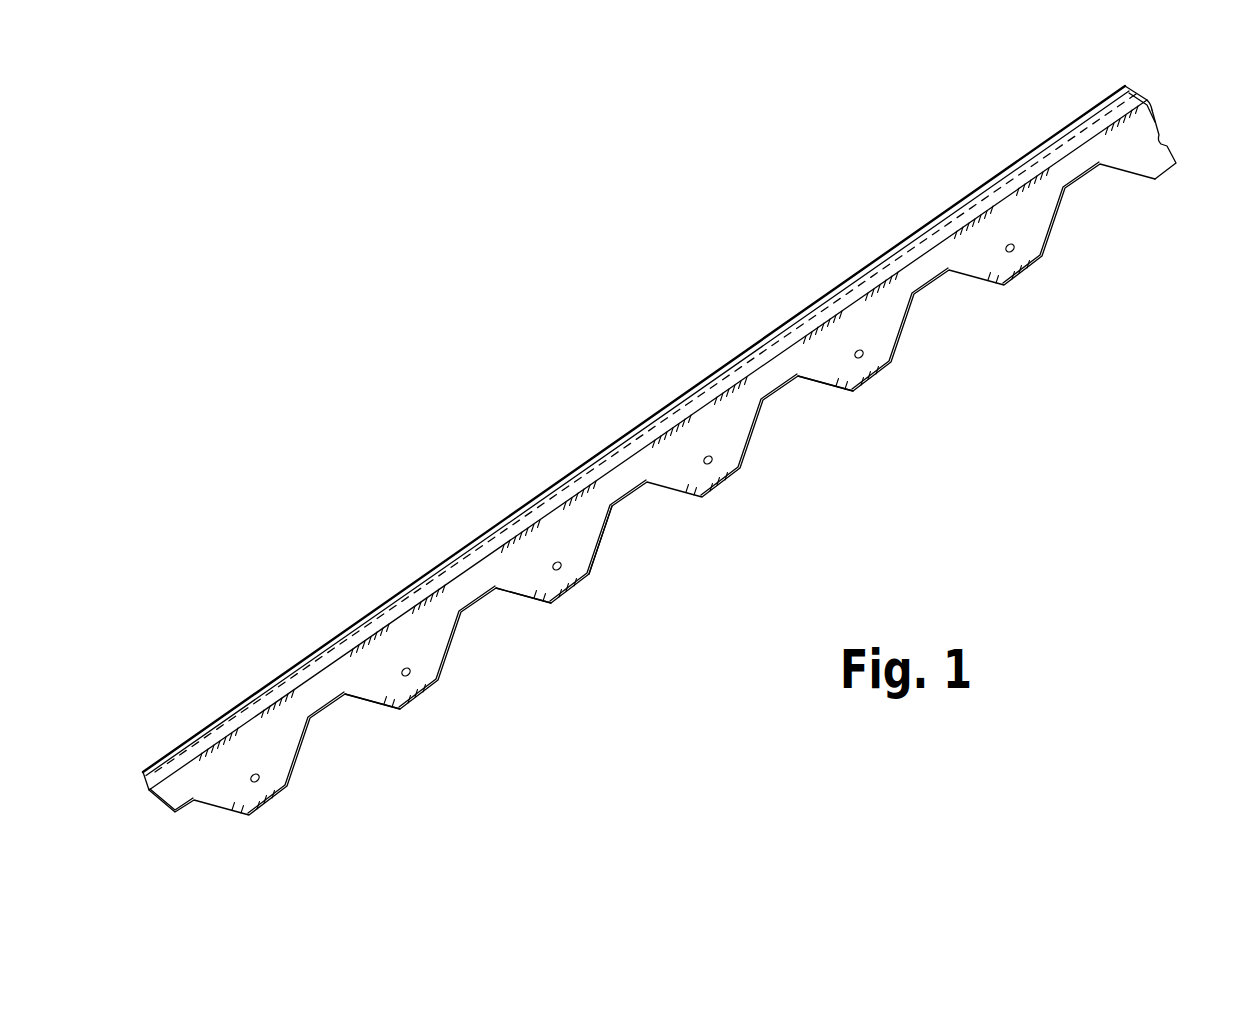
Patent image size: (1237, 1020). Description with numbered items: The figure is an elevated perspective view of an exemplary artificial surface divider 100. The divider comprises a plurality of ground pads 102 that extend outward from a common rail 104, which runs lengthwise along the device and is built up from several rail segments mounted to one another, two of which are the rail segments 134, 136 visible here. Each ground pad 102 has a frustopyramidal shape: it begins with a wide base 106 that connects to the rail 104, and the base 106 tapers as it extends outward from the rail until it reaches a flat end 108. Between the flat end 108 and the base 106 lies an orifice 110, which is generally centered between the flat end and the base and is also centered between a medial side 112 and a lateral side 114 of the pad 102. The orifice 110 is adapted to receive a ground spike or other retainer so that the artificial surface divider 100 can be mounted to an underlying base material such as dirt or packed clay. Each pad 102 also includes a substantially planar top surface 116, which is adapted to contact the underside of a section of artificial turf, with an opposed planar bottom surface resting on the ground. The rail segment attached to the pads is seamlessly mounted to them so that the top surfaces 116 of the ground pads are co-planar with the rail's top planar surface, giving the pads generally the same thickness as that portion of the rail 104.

The artificial surface divider 100 is at (427, 213).
The ground pad 102 is at (1033, 236).
The rail 104 is at (1164, 117).
The base 106 is at (816, 363).
The flat end 108 is at (866, 389).
The orifice 110 is at (703, 461).
The medial side 112 is at (527, 598).
The lateral side 114 is at (600, 521).
The top surface 116 is at (378, 705).
The rail segment 134 is at (1027, 165).
The rail segment 136 is at (1149, 102).